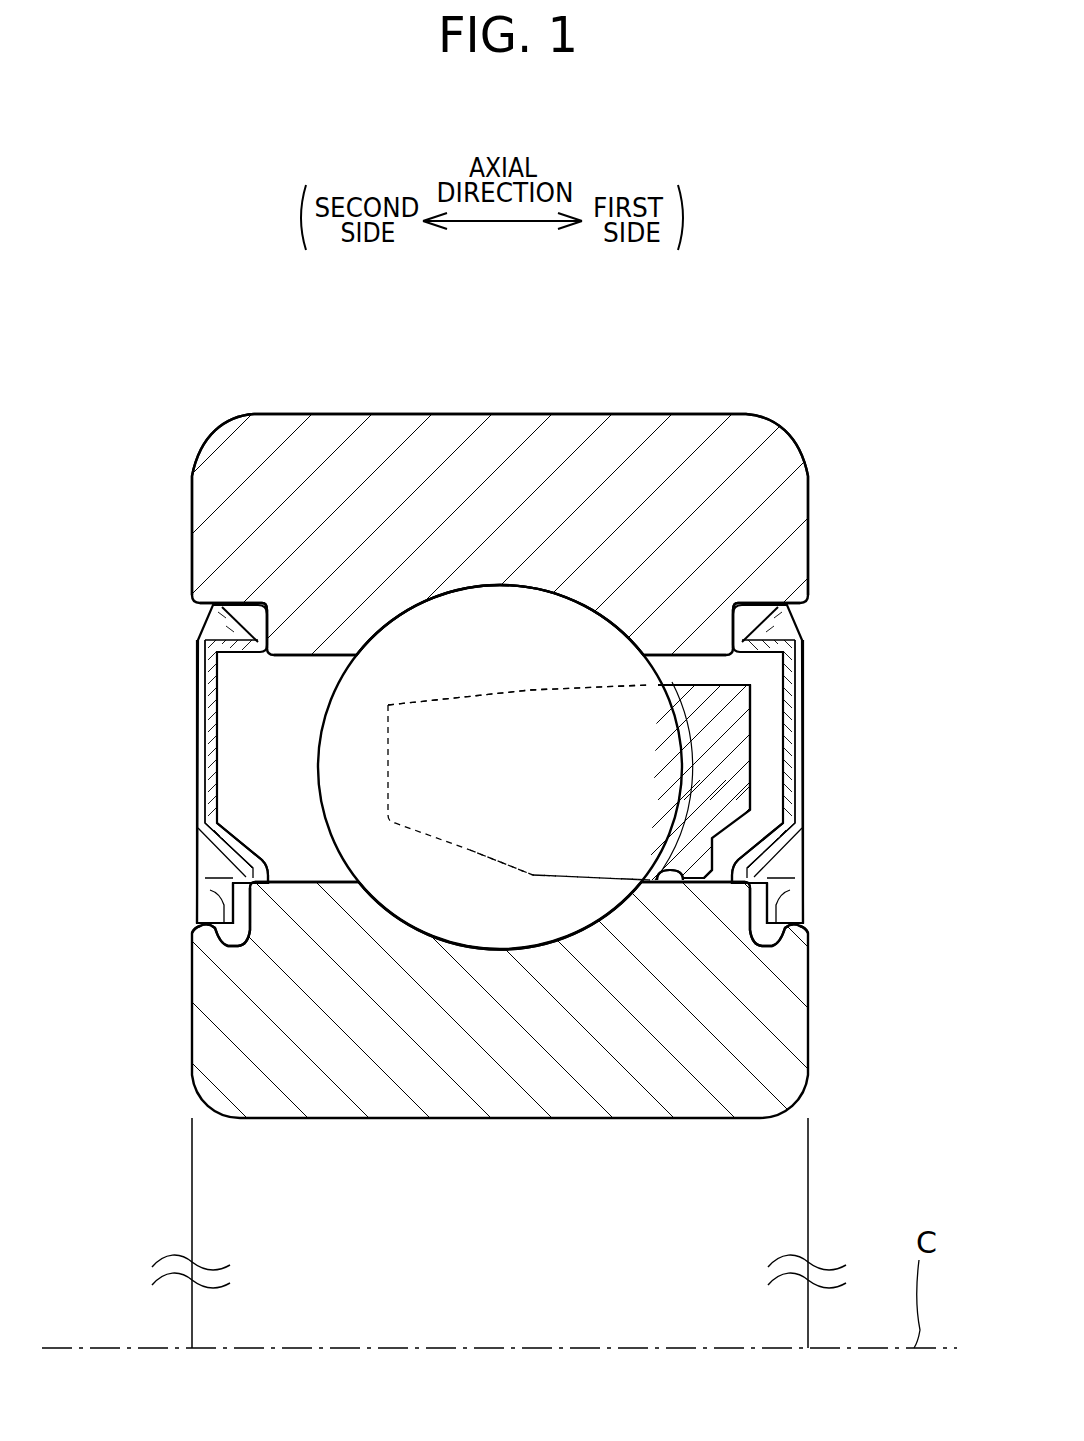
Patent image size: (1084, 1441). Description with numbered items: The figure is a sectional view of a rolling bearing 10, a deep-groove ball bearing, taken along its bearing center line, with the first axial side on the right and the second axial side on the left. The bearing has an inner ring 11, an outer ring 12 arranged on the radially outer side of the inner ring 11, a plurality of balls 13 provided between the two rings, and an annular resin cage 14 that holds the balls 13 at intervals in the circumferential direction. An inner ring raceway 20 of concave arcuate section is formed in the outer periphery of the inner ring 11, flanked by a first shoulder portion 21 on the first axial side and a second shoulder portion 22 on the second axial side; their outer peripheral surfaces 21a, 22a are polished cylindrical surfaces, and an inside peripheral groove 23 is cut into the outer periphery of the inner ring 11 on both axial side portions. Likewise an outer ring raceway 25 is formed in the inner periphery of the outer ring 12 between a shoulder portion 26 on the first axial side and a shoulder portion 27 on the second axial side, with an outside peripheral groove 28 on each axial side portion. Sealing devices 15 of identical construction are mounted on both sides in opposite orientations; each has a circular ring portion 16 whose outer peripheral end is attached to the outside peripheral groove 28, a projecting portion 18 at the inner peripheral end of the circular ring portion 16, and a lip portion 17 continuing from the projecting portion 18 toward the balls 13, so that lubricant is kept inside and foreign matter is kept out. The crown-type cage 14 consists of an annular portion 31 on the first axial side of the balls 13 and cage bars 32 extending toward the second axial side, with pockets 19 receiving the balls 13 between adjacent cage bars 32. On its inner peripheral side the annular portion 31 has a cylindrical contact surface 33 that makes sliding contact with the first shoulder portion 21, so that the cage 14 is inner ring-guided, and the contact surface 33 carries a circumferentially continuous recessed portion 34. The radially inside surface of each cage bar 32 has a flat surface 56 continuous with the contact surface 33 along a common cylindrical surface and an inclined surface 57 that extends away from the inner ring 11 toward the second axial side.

The rolling bearing 10 is at (794, 438).
The inner ring 11 is at (192, 1027).
The outer ring 12 is at (192, 515).
The balls 13 is at (342, 747).
The cage 14 is at (752, 747).
The sealing device 15 is at (197, 673).
The circular ring portion 16 is at (205, 709).
The lip portion 17 is at (205, 858).
The projecting portion 18 is at (197, 921).
The pocket 19 is at (368, 777).
The inner ring raceway 20 is at (390, 905).
The first shoulder portion 21 is at (710, 897).
The outer peripheral surface of first shoulder portion 21a is at (803, 815).
The second shoulder portion 22 is at (290, 897).
The outer peripheral surface of second shoulder portion 22a is at (197, 815).
The inside peripheral groove 23 is at (215, 888).
The outer ring raceway 25 is at (390, 630).
The shoulder portion 26 is at (690, 647).
The shoulder portion 27 is at (307, 647).
The outside peripheral groove 28 is at (203, 625).
The annular portion 31 is at (720, 778).
The cage bar 32 is at (530, 690).
The contact surface 33 is at (655, 882).
The recessed portion 34 is at (672, 887).
The flat surface 56 is at (593, 882).
The inclined surface 57 is at (505, 863).